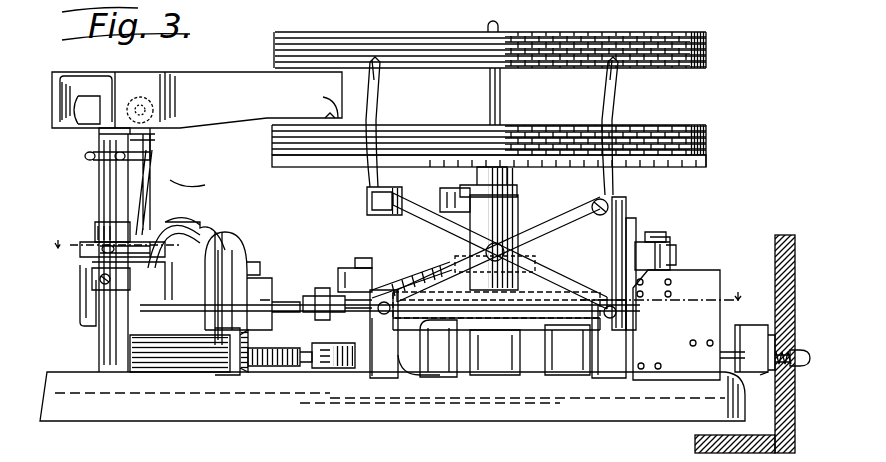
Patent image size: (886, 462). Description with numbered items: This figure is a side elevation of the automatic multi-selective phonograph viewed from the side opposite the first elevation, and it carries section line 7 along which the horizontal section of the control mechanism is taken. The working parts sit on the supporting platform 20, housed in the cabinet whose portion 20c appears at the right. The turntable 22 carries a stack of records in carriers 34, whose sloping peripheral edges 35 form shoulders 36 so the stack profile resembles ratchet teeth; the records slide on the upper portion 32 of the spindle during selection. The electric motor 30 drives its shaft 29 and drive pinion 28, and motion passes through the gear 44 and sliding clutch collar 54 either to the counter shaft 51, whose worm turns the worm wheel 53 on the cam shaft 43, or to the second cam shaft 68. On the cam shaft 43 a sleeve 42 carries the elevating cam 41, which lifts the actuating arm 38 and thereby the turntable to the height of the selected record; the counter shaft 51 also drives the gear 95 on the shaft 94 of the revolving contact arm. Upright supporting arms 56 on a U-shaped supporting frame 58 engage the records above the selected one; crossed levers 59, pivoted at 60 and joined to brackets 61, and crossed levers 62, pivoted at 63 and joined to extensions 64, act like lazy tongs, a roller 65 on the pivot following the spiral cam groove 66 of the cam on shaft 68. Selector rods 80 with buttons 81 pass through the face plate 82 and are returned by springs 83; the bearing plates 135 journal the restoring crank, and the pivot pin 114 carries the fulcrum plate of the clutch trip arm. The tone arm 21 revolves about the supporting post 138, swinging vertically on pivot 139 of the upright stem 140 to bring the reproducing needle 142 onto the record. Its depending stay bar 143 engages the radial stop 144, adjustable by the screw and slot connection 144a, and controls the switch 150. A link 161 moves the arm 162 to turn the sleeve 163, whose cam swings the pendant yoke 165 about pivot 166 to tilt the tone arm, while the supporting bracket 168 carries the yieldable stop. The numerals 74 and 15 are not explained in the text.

The supporting platform 20 is at (168, 412).
The housing wall 20c is at (758, 333).
The tone arm 21 is at (197, 100).
The turntable 22 is at (318, 165).
The drive pinion 28 is at (482, 332).
The motor shaft 29 is at (292, 304).
The electric motor 30 is at (238, 254).
The upper portion of spindle 32 is at (501, 110).
The record carrier 34 is at (520, 207).
The sloping peripheral edge 35 is at (708, 64).
The shoulder 36 is at (708, 148).
The actuating arm 38 is at (403, 283).
The elevating cam 41 is at (419, 365).
The sleeve 42 is at (343, 270).
The cam shaft 43 is at (368, 268).
The gear 44 is at (608, 78).
The counter shaft 51 is at (445, 358).
The worm wheel 53 is at (338, 368).
The sliding clutch collar 54 is at (445, 210).
The supporting arm 56 is at (379, 115).
The supporting frame 58 is at (386, 216).
The crossed lever 59 is at (548, 230).
The pivot 60 is at (480, 258).
The bracket 61 is at (498, 334).
The crossed lever 62 is at (633, 219).
The pivot 63 is at (638, 232).
The extension 64 is at (696, 272).
The roller 65 is at (676, 248).
The cam groove 66 is at (655, 250).
The cam shaft 68 is at (666, 240).
The lever tip 74 is at (380, 72).
The selector rod 80 is at (752, 362).
The button 81 is at (805, 368).
The face plate 82 is at (793, 350).
The spring 83 is at (768, 378).
The shaft 94 is at (272, 366).
The gear 95 is at (250, 366).
The pivot pin 114 is at (353, 392).
The bearing plate 135 is at (712, 356).
The supporting post 138 is at (100, 174).
The pivot 139 is at (100, 95).
The upright stem 140 is at (545, 386).
The reproducing needle 142 is at (313, 102).
The stay bar 143 is at (150, 140).
The radial stop 144 is at (176, 214).
The screw and slot connection 144a is at (110, 242).
The switch 150 is at (205, 243).
The link 161 is at (220, 326).
The arm 162 is at (80, 298).
The sleeve 163 is at (95, 224).
The pendant yoke 165 is at (211, 173).
The pivot 166 is at (150, 168).
The supporting bracket 168 is at (92, 280).
The section line 7— 7 is at (395, 270).
The cross bar 15 is at (548, 266).